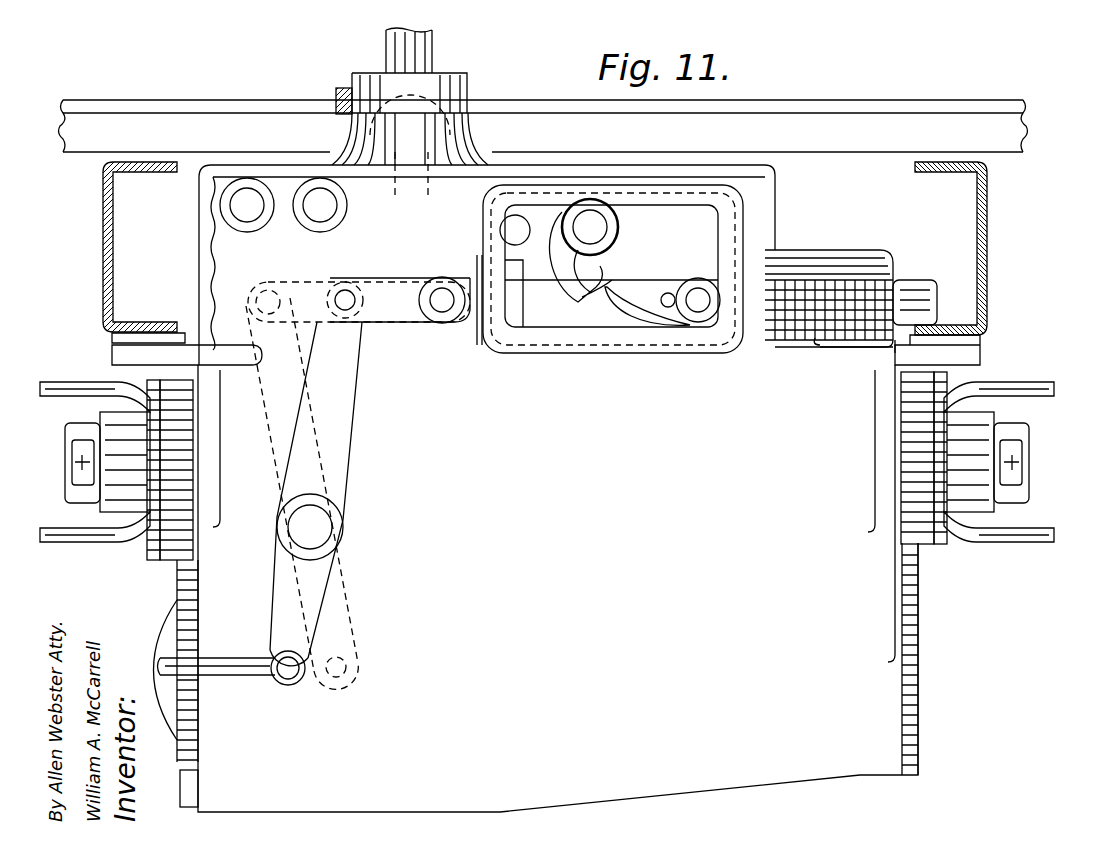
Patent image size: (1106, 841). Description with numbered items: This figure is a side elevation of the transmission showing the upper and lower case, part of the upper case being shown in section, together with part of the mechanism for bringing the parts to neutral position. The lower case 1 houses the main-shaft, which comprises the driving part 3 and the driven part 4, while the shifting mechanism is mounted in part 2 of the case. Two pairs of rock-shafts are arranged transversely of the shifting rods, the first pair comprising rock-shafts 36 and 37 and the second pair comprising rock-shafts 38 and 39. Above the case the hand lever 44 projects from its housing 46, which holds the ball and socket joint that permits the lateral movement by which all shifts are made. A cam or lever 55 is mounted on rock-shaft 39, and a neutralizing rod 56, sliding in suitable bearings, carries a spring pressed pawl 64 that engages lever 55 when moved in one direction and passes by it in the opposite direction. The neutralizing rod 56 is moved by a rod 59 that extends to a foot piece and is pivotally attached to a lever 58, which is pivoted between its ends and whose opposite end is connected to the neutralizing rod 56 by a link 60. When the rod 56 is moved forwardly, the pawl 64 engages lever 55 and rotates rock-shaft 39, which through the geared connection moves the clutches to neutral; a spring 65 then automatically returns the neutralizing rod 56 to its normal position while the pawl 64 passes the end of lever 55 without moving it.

The case 1 is at (536, 588).
The part of the case 2 is at (547, 265).
The driving part 3 is at (70, 460).
The driven part 4 is at (1030, 462).
The rock-shaft 36 is at (256, 215).
The rock-shaft 37 is at (329, 215).
The rock-shaft 38 is at (513, 232).
The rock-shaft 39 is at (600, 228).
The hand lever 44 is at (430, 55).
The housing 46 is at (467, 97).
The cam or lever 55 is at (594, 257).
The neutralizing rod 56 is at (480, 280).
The lever 58 is at (340, 401).
The rod 59 is at (215, 660).
The link 60 is at (359, 300).
The pawl 64 is at (637, 315).
The spring 65 is at (905, 280).